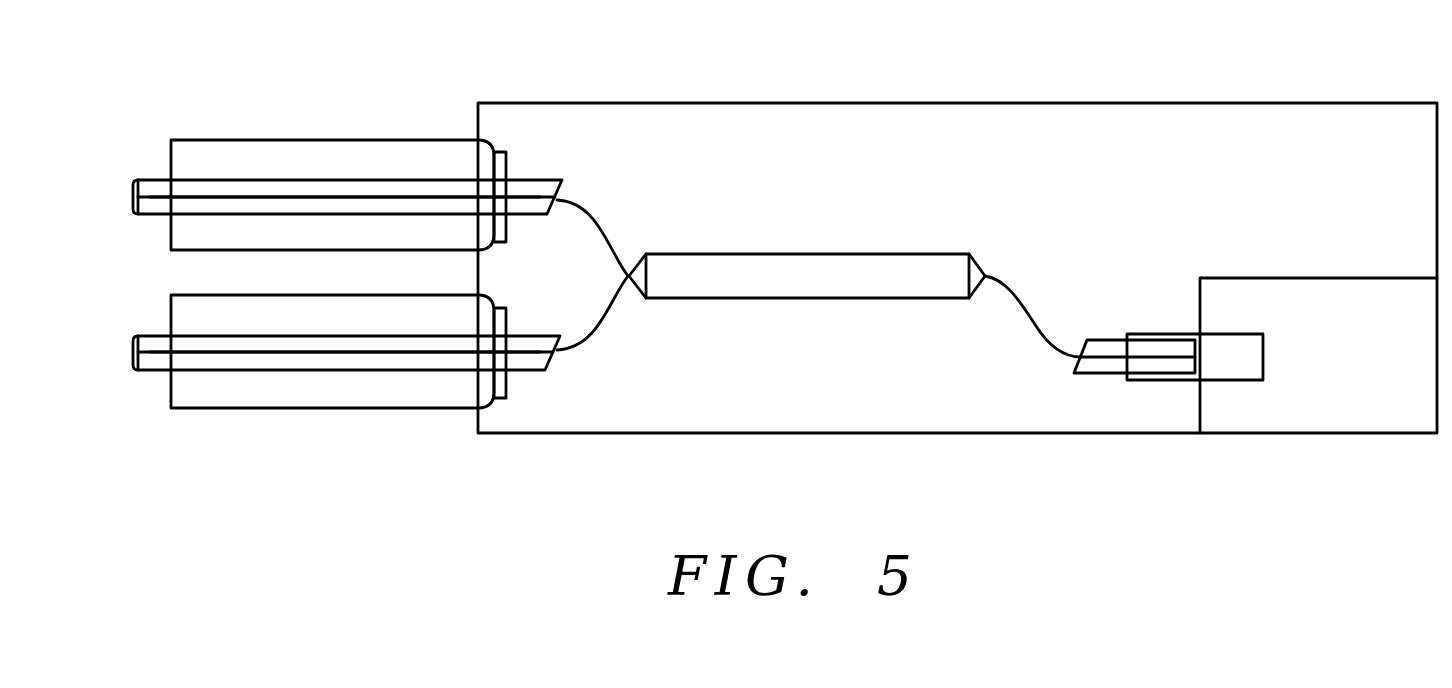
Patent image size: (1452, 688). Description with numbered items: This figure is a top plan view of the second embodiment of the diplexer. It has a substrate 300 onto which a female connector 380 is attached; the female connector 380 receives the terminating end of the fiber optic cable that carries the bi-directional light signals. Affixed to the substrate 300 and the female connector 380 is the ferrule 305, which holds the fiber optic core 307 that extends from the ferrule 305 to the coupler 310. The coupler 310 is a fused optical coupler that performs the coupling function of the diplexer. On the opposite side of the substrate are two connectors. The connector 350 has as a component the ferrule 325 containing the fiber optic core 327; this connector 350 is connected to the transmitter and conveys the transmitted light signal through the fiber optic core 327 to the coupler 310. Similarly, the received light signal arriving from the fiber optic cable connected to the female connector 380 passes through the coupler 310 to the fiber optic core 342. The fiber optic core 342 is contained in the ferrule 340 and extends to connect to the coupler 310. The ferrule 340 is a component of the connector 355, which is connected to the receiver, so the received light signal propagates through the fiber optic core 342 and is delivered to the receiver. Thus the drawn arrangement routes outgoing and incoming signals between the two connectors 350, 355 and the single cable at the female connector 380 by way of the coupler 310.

The substrate 300 is at (1088, 103).
The ferrule 305 is at (1093, 373).
The fiber optic core 307 is at (1178, 360).
The coupler 310 is at (805, 254).
The ferrule 325 is at (153, 372).
The fiber optic core 327 is at (443, 352).
The ferrule 340 is at (136, 180).
The fiber optic core 342 is at (224, 196).
The connector 350 is at (305, 408).
The connector 355 is at (320, 141).
The female connector 380 is at (1333, 423).